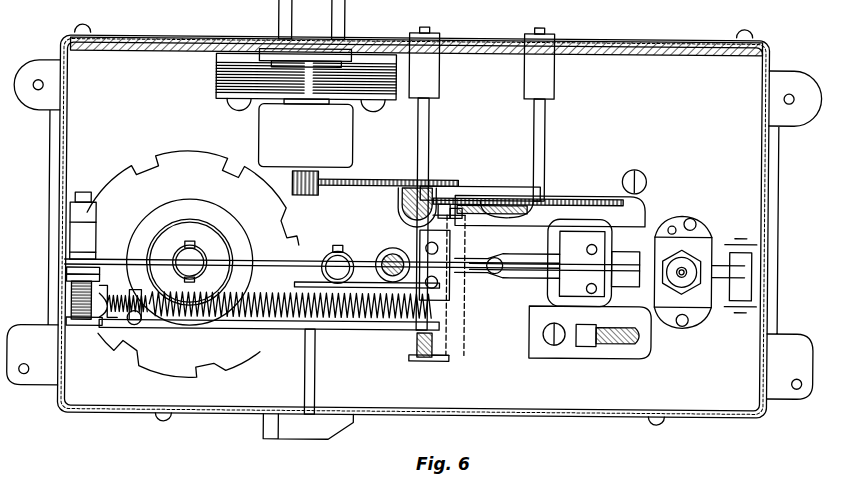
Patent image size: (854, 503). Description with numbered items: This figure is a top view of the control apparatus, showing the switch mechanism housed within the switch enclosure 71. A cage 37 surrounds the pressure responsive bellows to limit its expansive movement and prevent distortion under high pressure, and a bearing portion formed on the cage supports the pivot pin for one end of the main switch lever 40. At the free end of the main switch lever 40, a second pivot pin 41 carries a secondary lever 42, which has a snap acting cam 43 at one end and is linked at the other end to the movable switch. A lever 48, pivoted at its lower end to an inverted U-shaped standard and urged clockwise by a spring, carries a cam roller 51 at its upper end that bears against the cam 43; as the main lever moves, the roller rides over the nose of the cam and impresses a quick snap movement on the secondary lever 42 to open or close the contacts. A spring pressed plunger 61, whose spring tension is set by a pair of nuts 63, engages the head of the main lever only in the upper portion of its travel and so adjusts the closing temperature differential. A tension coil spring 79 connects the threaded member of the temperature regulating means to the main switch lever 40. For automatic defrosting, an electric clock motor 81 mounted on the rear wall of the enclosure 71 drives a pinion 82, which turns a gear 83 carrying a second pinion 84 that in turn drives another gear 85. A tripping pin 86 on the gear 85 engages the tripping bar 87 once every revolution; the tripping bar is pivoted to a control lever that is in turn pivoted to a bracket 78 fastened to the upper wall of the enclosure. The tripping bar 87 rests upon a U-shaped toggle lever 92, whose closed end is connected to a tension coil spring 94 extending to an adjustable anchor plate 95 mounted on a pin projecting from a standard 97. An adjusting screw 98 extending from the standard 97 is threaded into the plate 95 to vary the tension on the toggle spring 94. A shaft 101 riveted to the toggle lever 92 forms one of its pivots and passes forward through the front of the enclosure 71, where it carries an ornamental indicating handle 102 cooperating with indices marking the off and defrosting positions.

The cage 37 is at (150, 160).
The main switch lever 40 is at (262, 268).
The second pivot pin 41 is at (628, 252).
The secondary lever 42 is at (547, 288).
The snap acting cam 43 is at (750, 270).
The lever 48 is at (740, 318).
The cam roller 51 is at (755, 282).
The spring pressed plunger 61 is at (681, 277).
The nuts 63 is at (690, 282).
The switch enclosure 71 is at (633, 420).
The bracket 78 is at (432, 360).
The tension coil spring 79 is at (378, 258).
The electric clock motor 81 is at (254, 90).
The pinion 82 is at (296, 178).
The gear 83 is at (358, 180).
The second pinion 84 is at (403, 200).
The gear 85 is at (592, 195).
The tripping pin 86 is at (452, 218).
The tripping bar 87 is at (446, 314).
The U-shaped toggle lever 92 is at (340, 330).
The tension coil spring 94 is at (212, 320).
The adjustable anchor plate 95 is at (118, 292).
The standard 97 is at (96, 328).
The adjusting screw 98 is at (134, 320).
The shaft 101 is at (316, 386).
The indicating handle 102 is at (295, 435).